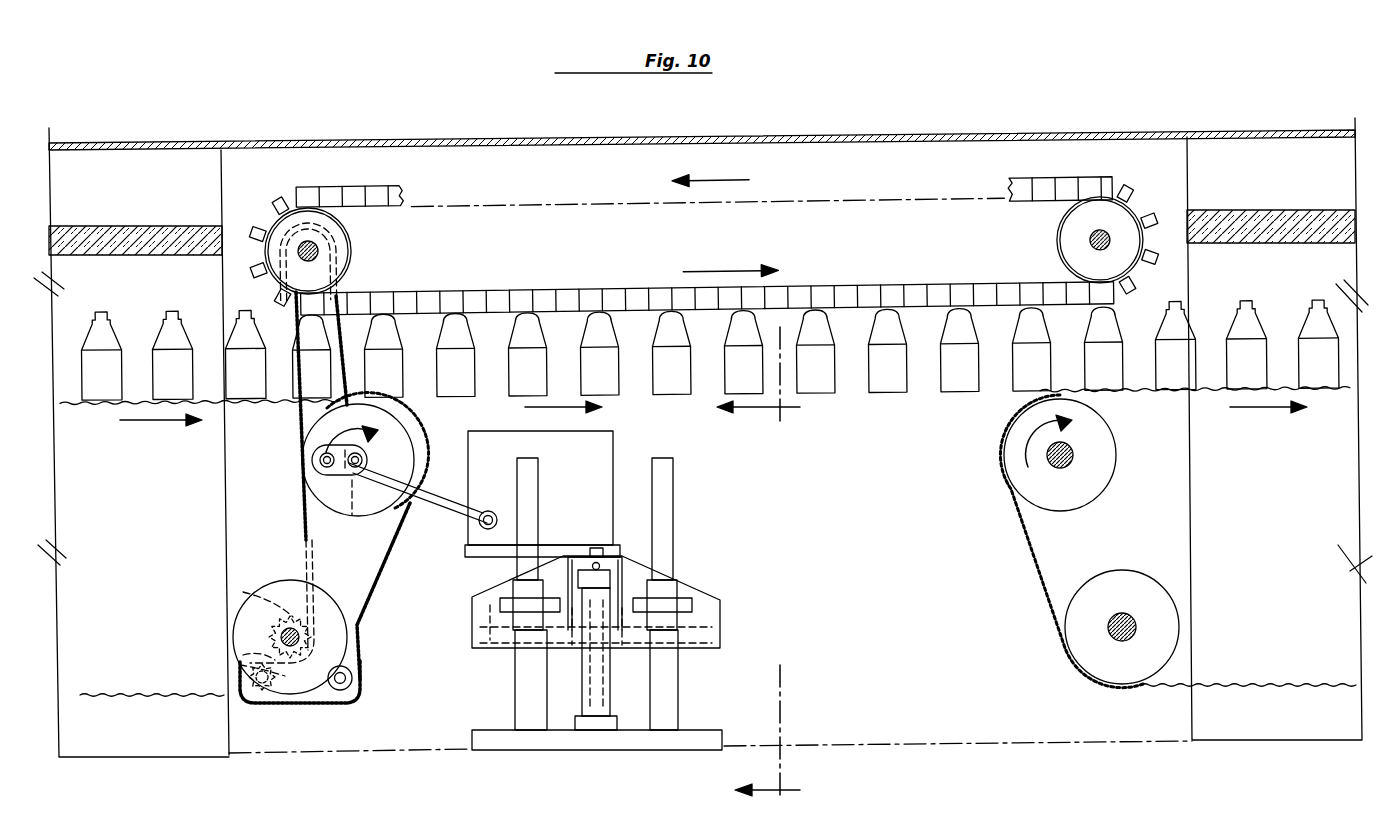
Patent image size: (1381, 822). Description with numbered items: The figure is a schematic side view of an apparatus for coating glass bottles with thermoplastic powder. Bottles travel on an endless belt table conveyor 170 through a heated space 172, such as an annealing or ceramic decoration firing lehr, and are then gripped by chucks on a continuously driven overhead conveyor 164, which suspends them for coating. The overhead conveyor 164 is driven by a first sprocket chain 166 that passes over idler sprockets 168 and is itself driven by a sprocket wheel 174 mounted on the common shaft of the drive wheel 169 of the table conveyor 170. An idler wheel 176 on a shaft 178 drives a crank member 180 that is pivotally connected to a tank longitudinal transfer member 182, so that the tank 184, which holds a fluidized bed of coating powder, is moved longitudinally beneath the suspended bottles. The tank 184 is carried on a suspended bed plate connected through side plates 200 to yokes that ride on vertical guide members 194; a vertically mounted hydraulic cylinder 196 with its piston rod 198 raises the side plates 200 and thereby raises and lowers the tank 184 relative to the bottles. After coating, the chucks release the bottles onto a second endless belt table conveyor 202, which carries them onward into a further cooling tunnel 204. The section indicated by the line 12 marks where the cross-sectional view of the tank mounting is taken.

The section line 12- 12 is at (792, 565).
The overhead conveyor 164 is at (369, 176).
The first sprocket chain 166 is at (298, 421).
The idler sprockets 168 is at (250, 682).
The drive wheel 169 is at (325, 635).
The endless belt table conveyor 170 is at (118, 695).
The heated space 172 is at (100, 271).
The sprocket wheel 174 is at (243, 592).
The idler wheel 176 is at (327, 488).
The shaft 178 is at (345, 474).
The crank member 180 is at (370, 463).
The tank longitudinal transfer member 182 is at (432, 503).
The tank 184 is at (602, 451).
The vertical guide members 194 is at (662, 525).
The hydraulic cylinder 196 is at (598, 705).
The piston rod 198 is at (610, 577).
The side plates 200 is at (710, 598).
The second endless belt table conveyor 202 is at (1153, 402).
The cooling tunnel 204 is at (1265, 163).